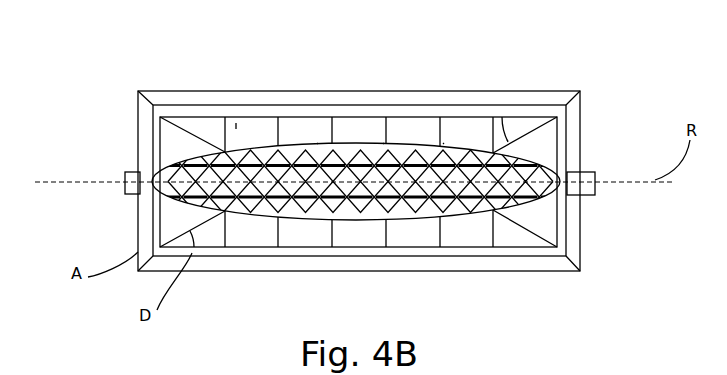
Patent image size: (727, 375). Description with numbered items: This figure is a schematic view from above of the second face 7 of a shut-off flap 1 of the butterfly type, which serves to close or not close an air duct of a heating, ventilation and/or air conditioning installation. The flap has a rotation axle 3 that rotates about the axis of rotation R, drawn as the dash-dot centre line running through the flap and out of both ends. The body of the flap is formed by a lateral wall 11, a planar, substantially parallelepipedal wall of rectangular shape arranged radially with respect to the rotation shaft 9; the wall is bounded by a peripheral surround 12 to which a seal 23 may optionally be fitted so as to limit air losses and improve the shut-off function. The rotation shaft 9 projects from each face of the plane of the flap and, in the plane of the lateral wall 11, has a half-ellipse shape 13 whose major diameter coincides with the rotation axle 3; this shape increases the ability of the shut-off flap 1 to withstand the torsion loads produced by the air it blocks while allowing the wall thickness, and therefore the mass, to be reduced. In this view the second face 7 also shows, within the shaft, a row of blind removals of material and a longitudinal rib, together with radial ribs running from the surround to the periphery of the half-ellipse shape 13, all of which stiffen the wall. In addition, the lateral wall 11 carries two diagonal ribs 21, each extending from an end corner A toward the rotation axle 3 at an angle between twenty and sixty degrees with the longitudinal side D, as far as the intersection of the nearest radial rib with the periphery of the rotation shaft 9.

The shut-off flap 1 is at (606, 110).
The rotation axle 3 is at (595, 197).
The second face 7 is at (574, 140).
The rotation shaft 9 is at (358, 126).
The lateral wall 11 is at (235, 125).
The peripheral surround 12 is at (265, 115).
The half-ellipse shape 13 is at (317, 143).
The diagonal rib 21 is at (163, 222).
The seal 23 is at (573, 237).